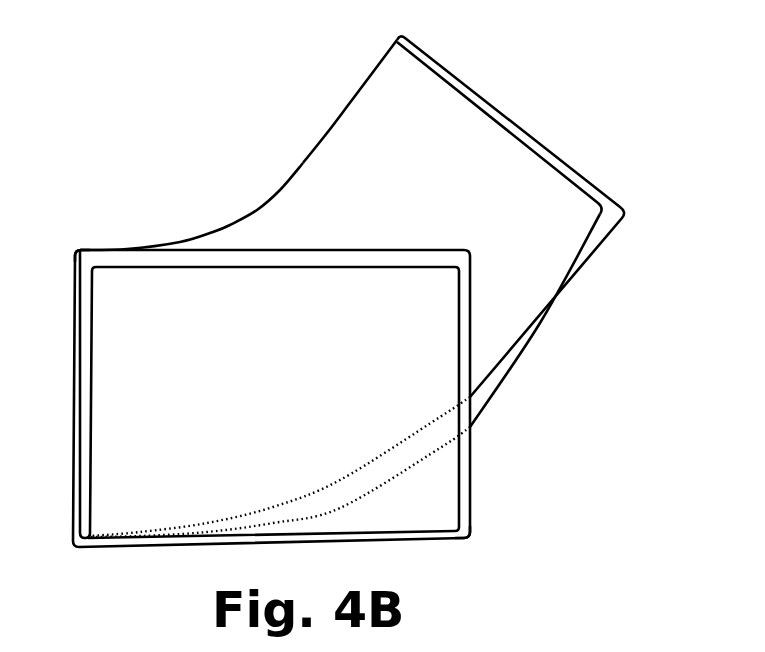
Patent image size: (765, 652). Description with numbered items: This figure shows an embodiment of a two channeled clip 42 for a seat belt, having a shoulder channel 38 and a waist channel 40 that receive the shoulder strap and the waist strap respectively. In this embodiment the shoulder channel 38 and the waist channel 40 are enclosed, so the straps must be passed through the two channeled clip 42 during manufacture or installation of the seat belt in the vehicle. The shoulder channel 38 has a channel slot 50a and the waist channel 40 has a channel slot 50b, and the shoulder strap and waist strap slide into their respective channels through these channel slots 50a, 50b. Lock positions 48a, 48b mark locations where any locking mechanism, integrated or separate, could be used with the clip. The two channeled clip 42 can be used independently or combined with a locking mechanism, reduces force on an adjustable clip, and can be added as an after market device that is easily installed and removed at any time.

The shoulder channel 38 is at (530, 135).
The waist channel 40 is at (470, 455).
The two channeled clip 42 is at (367, 332).
The lock position 48a is at (81, 235).
The lock position 48b is at (466, 550).
The channel slot 50a is at (518, 359).
The channel slot 50b is at (240, 254).